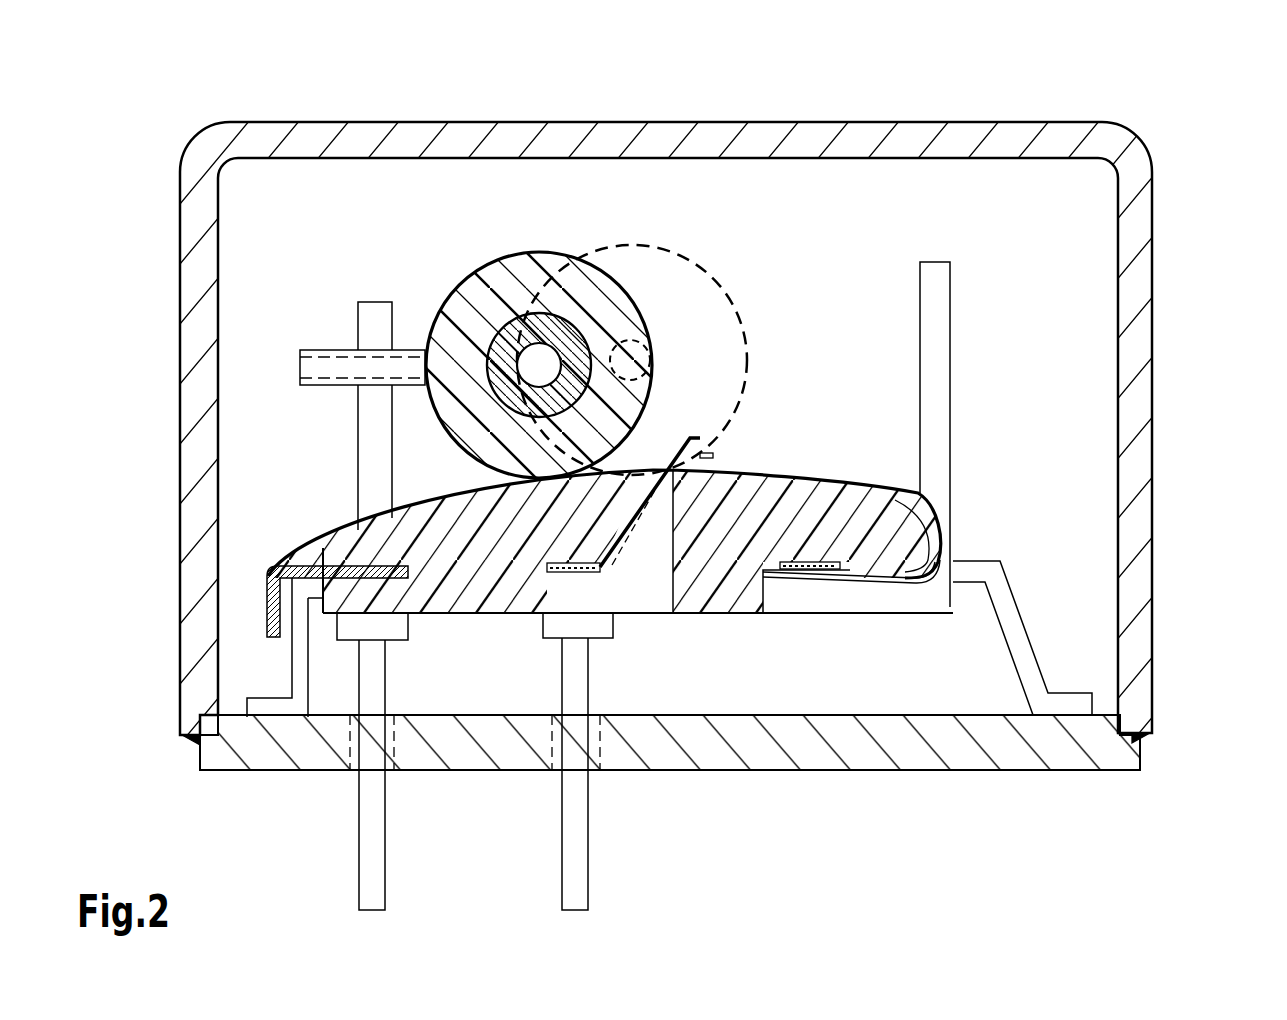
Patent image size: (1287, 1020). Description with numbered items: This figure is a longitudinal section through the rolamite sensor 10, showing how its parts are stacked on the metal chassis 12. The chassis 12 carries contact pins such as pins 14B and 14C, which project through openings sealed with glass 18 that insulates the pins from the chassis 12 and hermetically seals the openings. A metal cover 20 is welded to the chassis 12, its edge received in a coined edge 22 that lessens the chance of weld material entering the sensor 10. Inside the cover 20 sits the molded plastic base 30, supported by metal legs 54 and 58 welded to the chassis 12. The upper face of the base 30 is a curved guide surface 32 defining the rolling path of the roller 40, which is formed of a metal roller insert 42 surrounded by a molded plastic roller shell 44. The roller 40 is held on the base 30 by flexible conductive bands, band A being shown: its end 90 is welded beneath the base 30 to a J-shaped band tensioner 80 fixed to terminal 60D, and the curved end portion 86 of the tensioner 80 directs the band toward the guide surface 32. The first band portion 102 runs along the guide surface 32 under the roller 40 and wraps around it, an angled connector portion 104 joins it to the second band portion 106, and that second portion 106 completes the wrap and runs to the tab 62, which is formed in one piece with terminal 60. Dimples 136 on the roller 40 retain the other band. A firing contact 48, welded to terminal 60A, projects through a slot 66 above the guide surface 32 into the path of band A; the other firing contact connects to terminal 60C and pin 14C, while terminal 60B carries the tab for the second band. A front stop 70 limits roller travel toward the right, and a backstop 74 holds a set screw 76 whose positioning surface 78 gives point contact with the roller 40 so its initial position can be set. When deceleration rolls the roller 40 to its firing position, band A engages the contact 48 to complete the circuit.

The rolamite sensor 10 is at (1165, 150).
The metal chassis 12 is at (937, 770).
The contact pin 14B is at (373, 818).
The contact pin 14C is at (575, 835).
The glass material 18 is at (352, 770).
The metal cover 20 is at (1115, 440).
The coined edge 22 is at (1122, 728).
The base 30 is at (733, 613).
The curved guide surface 32 is at (825, 480).
The roller 40 is at (529, 331).
The metal roller insert 42 is at (495, 385).
The plastic roller shell 44 is at (470, 437).
The firing contact 48 is at (688, 437).
The metal leg 54 is at (1016, 620).
The metal leg 58 is at (272, 710).
The terminal 60 is at (445, 545).
The terminal 60A is at (553, 600).
The terminal 60B is at (392, 627).
The terminal 60C is at (548, 638).
The terminal 60D is at (793, 587).
The tab 62 is at (267, 630).
The slot 66 is at (633, 587).
The front stop 70 is at (935, 282).
The backstop 74 is at (355, 455).
The set screw 76 is at (300, 372).
The positioning surface 78 is at (425, 342).
The band tensioner 80 is at (847, 583).
The curved end portion 86 is at (940, 584).
The end of band A 90 is at (903, 582).
The first band portion 102 is at (790, 470).
The angled connector portion 104 is at (455, 295).
The second band portion 106 is at (300, 548).
The dimples 136 is at (473, 262).
The band A is at (755, 468).